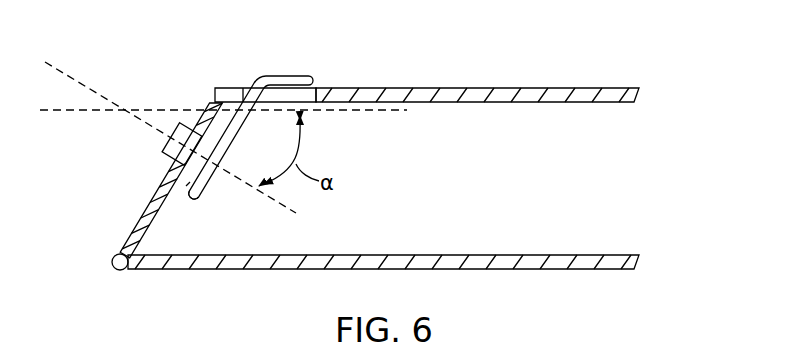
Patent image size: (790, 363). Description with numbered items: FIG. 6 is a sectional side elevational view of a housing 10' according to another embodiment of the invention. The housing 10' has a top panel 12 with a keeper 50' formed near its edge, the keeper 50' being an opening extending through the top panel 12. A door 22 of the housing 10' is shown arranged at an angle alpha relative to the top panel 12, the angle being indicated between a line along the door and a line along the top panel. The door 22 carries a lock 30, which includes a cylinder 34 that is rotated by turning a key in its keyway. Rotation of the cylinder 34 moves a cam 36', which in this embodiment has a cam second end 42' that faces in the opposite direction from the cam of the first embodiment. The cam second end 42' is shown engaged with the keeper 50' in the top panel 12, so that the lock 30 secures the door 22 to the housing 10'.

The housing 10' is at (375, 144).
The top panel 12 is at (438, 89).
The door 22 is at (137, 225).
The lock 30 is at (158, 156).
The cylinder 34 is at (188, 185).
The cam 36' is at (221, 208).
The cam second end 42' is at (251, 110).
The keeper 50' is at (280, 68).